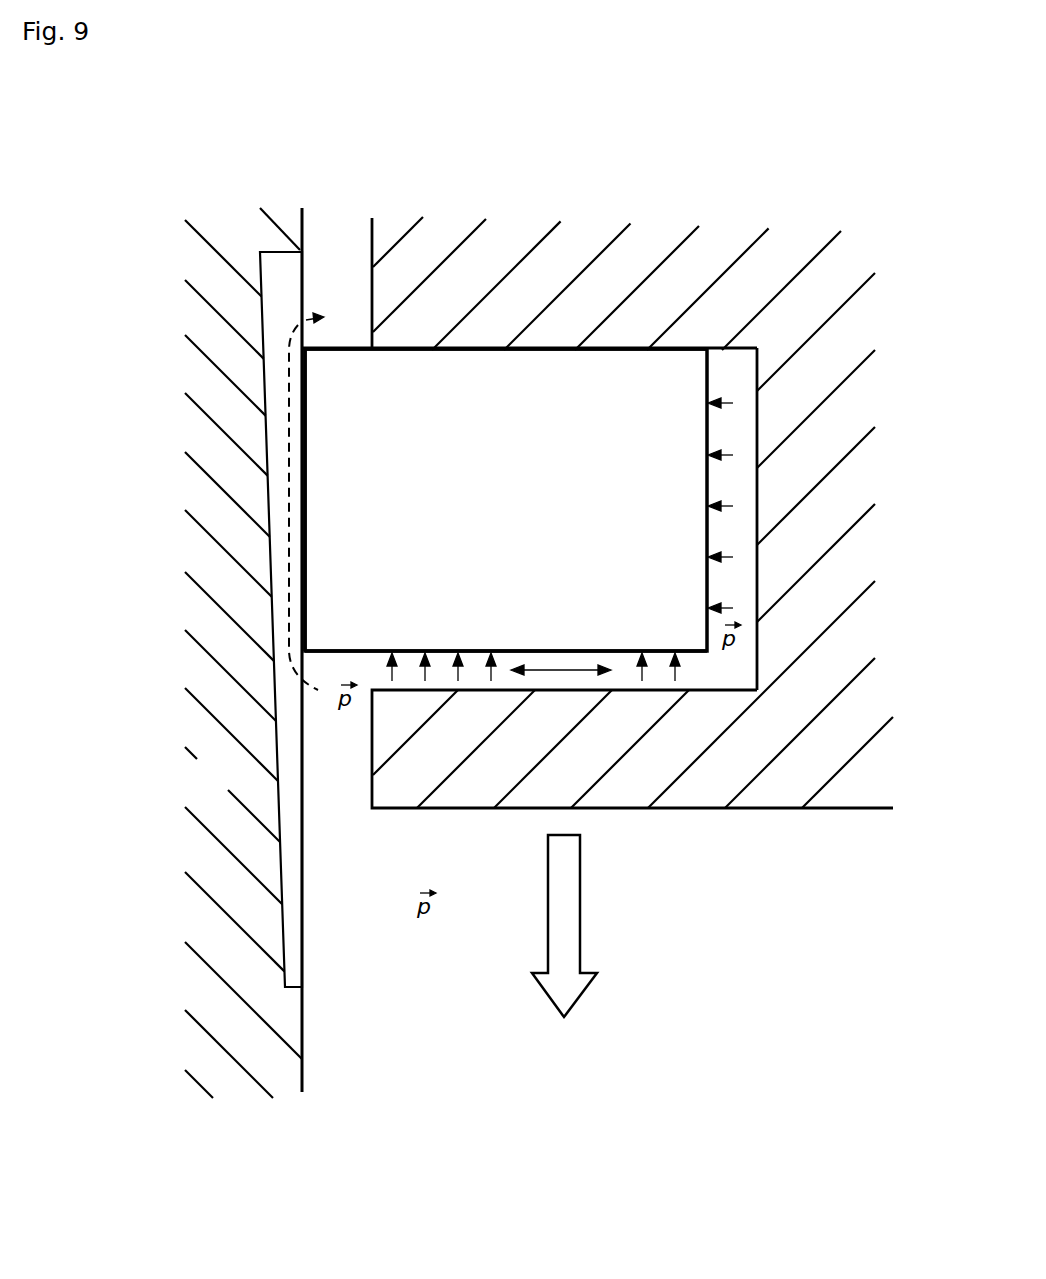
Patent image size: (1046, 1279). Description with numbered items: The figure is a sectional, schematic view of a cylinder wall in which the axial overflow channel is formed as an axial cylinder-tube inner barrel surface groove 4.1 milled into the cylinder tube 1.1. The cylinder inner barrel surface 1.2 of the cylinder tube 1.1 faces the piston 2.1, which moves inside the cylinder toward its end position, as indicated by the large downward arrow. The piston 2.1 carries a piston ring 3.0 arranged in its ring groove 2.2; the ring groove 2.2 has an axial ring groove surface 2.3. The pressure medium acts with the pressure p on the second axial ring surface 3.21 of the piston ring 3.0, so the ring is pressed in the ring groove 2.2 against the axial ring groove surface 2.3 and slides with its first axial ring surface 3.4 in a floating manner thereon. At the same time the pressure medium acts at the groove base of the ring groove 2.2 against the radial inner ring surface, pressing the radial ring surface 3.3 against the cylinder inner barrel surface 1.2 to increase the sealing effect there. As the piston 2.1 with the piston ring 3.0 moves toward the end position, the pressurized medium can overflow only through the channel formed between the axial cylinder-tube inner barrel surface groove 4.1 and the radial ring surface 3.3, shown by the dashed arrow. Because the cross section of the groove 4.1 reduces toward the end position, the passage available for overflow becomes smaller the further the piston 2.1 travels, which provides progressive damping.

The cylinder tube 1.1 is at (256, 784).
The cylinder inner barrel surface 1.2 is at (302, 1025).
The piston 2.1 is at (754, 756).
The ring groove 2.2 is at (752, 441).
The axial ring groove surface 2.3 is at (392, 361).
The piston ring 3.0 is at (530, 519).
The second axial ring surface 3.21 is at (636, 652).
The radial ring surface 3.3 is at (302, 478).
The first axial ring surface 3.4 is at (633, 350).
The axial cylinder-tube inner barrel surface groove 4.1 is at (292, 276).